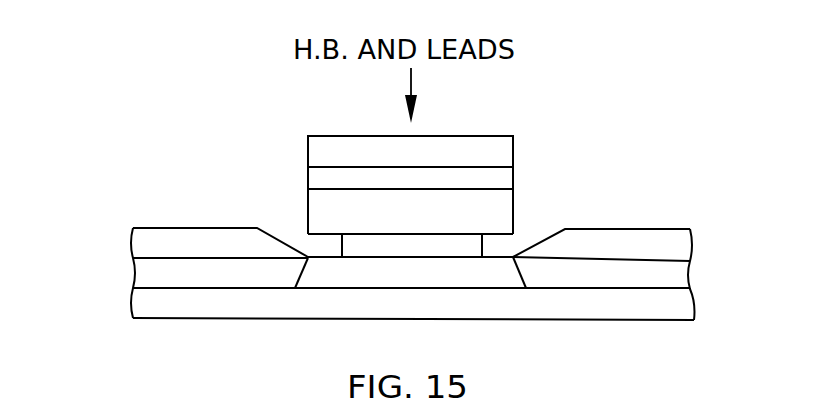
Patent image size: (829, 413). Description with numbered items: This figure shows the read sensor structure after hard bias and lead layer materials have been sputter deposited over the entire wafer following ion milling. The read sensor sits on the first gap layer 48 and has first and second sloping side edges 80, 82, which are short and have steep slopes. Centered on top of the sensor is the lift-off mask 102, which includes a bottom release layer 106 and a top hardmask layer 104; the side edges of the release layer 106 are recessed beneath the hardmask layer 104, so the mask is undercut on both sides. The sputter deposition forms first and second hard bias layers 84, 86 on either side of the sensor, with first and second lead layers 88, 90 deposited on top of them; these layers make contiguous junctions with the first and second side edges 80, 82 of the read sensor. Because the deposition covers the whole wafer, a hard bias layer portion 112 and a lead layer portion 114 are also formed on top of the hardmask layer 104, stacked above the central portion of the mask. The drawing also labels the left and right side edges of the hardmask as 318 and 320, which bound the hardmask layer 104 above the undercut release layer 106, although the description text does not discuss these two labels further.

The lead layer portion 114 is at (497, 157).
The hard bias layer portion 112 is at (308, 177).
The hardmask layer 104 is at (308, 220).
The left edge of hardmask 318 is at (308, 201).
The right edge of hardmask 320 is at (513, 210).
The release layer 106 is at (483, 257).
The lift-off mask 102 is at (585, 206).
The first sloping side edge 80 is at (300, 278).
The second sloping side edge 82 is at (527, 279).
The first lead layer 88 is at (145, 240).
The first hard bias layer 84 is at (145, 275).
The first gap layer 48 is at (145, 305).
The second lead layer 90 is at (652, 247).
The second hard bias layer 86 is at (653, 278).